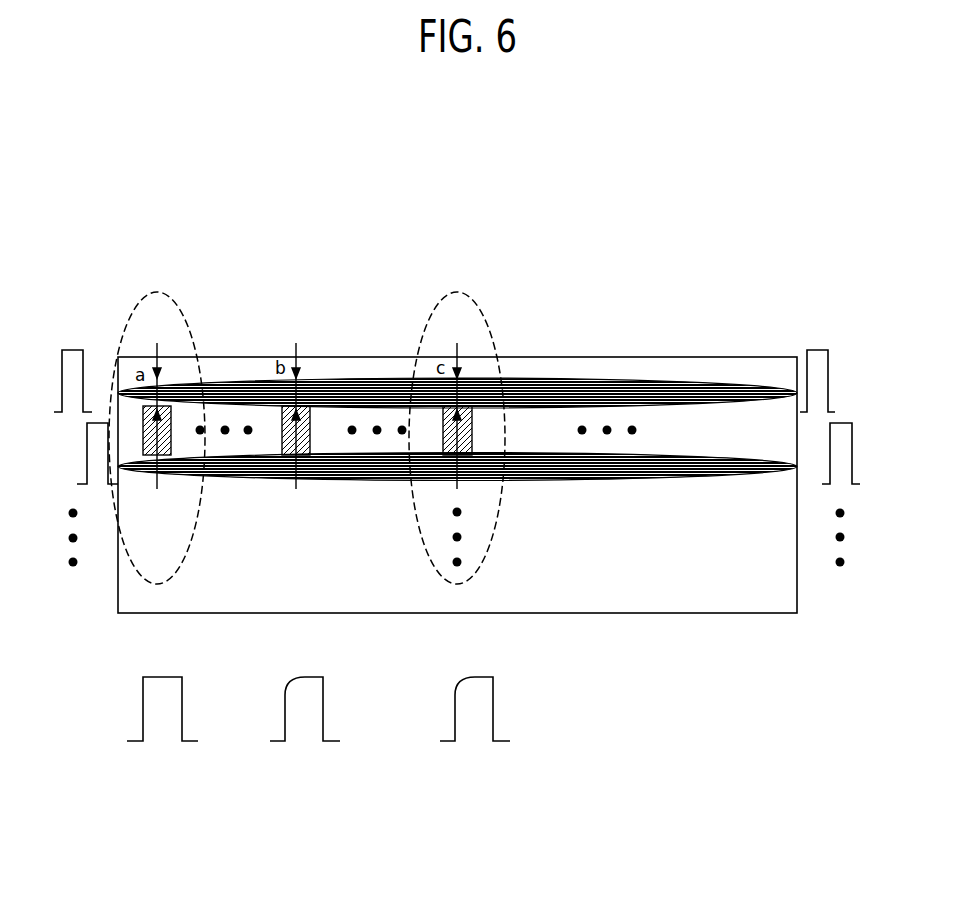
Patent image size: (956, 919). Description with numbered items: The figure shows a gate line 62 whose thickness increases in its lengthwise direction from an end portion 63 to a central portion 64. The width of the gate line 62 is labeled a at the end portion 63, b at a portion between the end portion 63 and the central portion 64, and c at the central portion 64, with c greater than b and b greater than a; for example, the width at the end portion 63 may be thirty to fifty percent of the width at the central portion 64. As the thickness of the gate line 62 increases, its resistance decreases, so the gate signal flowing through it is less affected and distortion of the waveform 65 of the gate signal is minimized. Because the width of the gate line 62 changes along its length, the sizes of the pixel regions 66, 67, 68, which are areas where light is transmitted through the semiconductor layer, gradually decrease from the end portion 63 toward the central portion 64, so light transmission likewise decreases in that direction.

The gate line 62 is at (345, 390).
The end portion 63 is at (135, 307).
The central portion 64 is at (480, 303).
The waveform 65 is at (477, 759).
The pixel region 66 is at (150, 443).
The pixel region 67 is at (287, 447).
The pixel region 68 is at (448, 445).